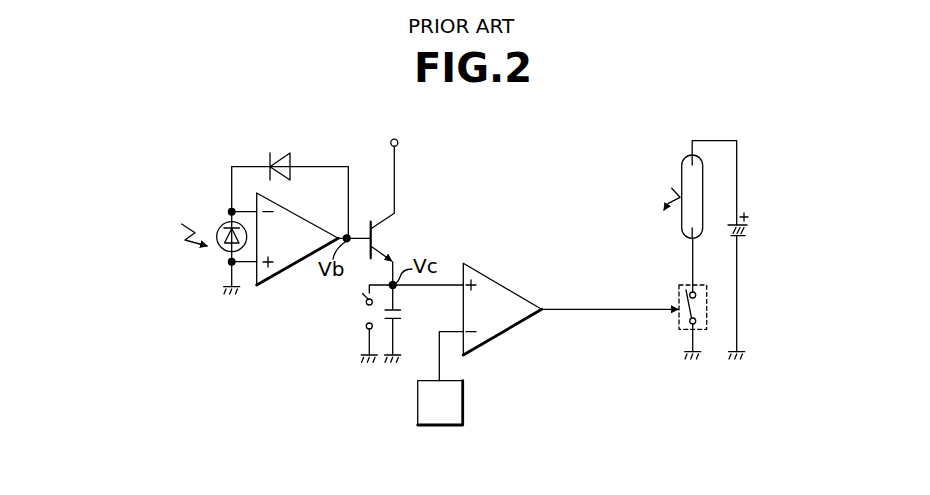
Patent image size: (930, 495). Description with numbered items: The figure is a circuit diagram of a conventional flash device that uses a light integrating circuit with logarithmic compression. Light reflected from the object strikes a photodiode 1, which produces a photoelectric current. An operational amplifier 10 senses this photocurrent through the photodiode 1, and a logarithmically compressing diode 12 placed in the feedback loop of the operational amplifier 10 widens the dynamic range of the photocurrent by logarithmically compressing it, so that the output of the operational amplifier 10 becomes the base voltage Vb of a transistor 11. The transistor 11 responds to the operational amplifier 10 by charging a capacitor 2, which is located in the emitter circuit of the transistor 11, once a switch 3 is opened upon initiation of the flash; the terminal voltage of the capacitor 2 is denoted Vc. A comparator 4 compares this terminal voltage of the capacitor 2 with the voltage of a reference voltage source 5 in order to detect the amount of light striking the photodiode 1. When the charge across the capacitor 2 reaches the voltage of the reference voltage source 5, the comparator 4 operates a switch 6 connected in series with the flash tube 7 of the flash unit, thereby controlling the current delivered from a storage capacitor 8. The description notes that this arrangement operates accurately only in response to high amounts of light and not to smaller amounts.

The photodiode 1 is at (223, 220).
The capacitor 2 is at (400, 315).
The switch 3 is at (362, 306).
The comparator 4 is at (498, 284).
The reference voltage source 5 is at (463, 397).
The switch 6 is at (679, 320).
The flash tube 7 is at (682, 173).
The storage capacitor 8 is at (747, 228).
The operational amplifier 10 is at (307, 221).
The transistor 11 is at (379, 244).
The logarithmically compressing diode 12 is at (282, 153).